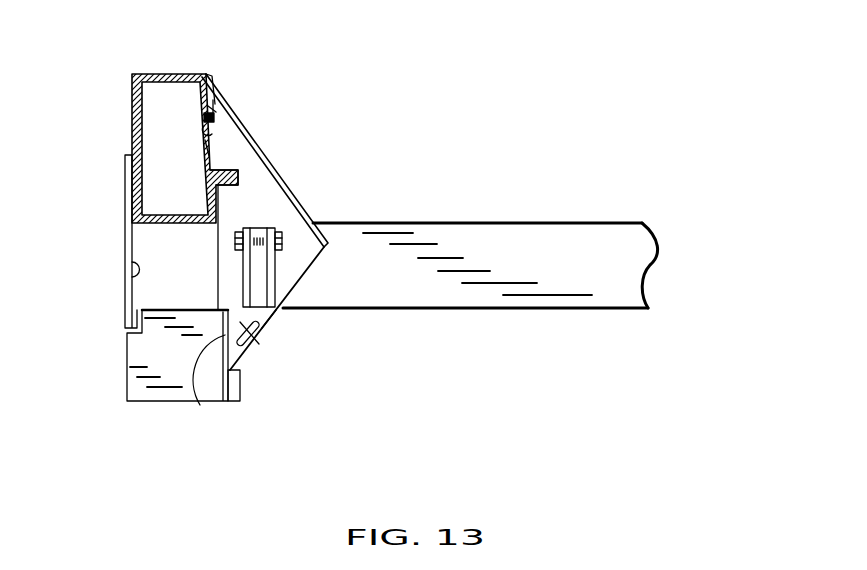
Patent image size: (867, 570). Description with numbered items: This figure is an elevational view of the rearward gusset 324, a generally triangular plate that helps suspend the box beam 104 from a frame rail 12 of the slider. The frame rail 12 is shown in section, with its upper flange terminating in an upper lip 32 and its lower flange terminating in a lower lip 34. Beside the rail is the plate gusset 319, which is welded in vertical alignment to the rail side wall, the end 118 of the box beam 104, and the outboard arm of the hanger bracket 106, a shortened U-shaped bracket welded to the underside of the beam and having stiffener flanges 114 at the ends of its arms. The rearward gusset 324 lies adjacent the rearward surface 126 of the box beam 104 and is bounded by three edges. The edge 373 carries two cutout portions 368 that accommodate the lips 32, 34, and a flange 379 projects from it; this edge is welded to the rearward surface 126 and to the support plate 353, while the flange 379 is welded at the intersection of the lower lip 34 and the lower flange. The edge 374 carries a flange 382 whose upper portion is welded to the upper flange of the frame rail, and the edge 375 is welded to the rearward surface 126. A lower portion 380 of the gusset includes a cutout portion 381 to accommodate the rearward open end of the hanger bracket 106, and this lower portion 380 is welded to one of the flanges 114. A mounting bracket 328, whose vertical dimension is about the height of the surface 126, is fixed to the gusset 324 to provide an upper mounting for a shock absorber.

The frame rail 12 is at (159, 67).
The upper lip 32 is at (201, 139).
The lower lip 34 is at (207, 171).
The box beam 104 is at (622, 296).
The hanger bracket 106 is at (118, 365).
The stiffener flange 114 is at (233, 393).
The end of the box beam 118 is at (132, 262).
The rearward surface 126 is at (538, 263).
The plate gusset 319 is at (127, 183).
The rearward gusset 324 is at (268, 204).
The mounting bracket 328 is at (270, 270).
The support plate 353 is at (203, 130).
The cutout portion 368 is at (214, 104).
The rearward gusset edge 373 is at (218, 289).
The edge 374 is at (211, 150).
The edge 375 is at (272, 317).
The flange 379 is at (218, 245).
The lower portion 380 is at (256, 343).
The cutout portion 381 is at (200, 405).
The flange 382 is at (216, 113).